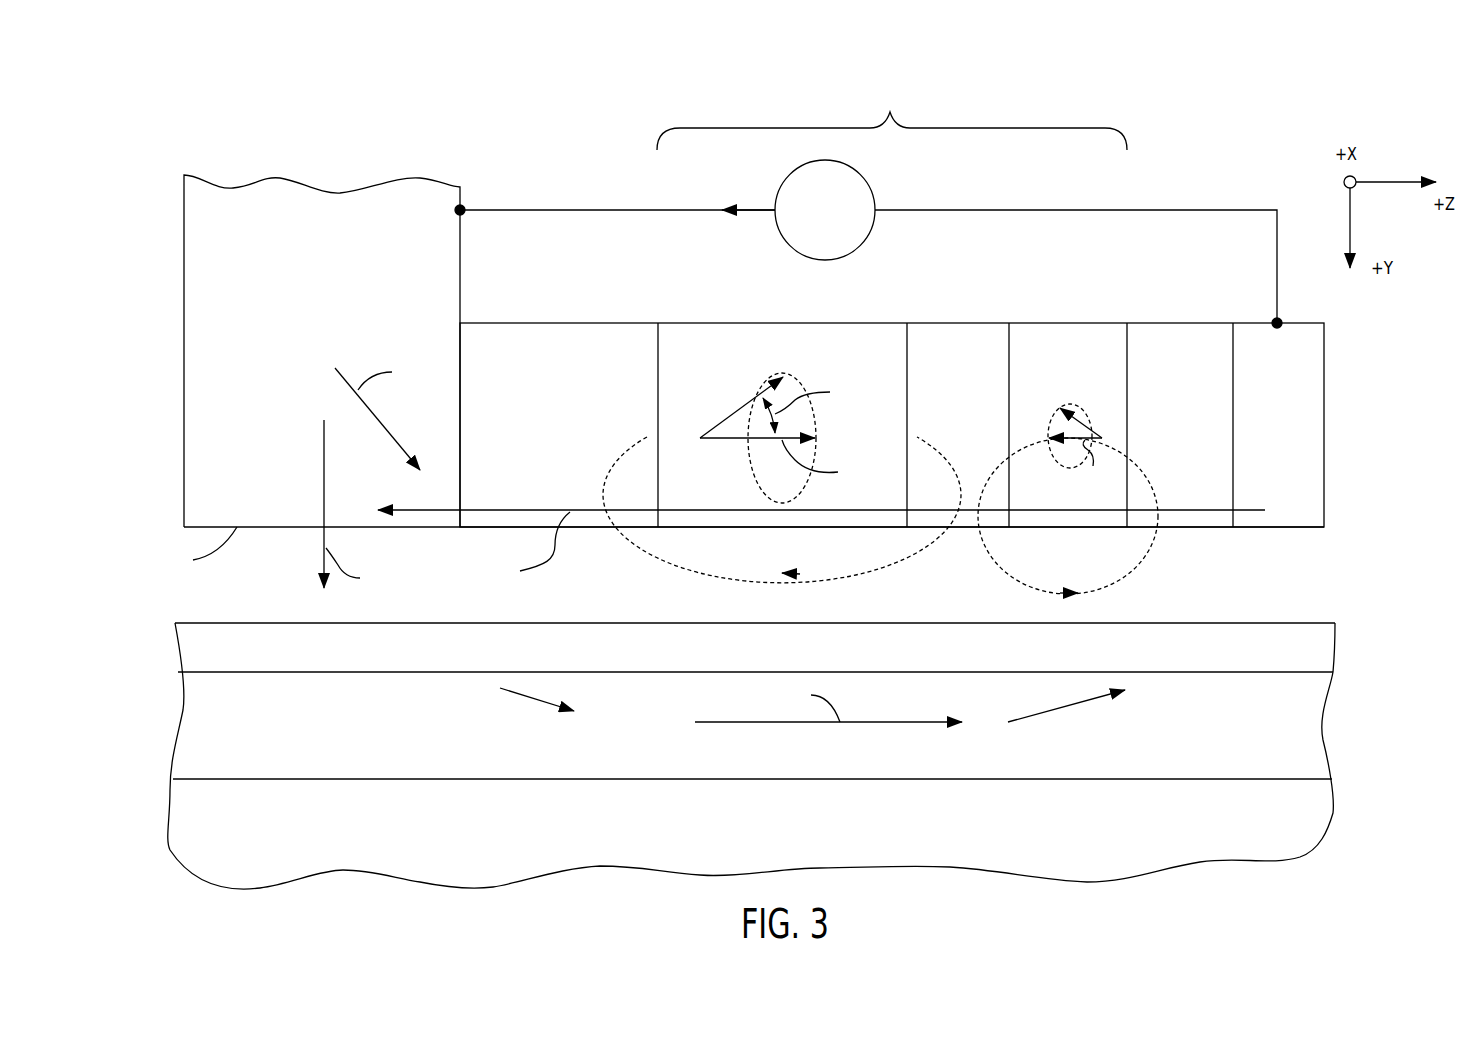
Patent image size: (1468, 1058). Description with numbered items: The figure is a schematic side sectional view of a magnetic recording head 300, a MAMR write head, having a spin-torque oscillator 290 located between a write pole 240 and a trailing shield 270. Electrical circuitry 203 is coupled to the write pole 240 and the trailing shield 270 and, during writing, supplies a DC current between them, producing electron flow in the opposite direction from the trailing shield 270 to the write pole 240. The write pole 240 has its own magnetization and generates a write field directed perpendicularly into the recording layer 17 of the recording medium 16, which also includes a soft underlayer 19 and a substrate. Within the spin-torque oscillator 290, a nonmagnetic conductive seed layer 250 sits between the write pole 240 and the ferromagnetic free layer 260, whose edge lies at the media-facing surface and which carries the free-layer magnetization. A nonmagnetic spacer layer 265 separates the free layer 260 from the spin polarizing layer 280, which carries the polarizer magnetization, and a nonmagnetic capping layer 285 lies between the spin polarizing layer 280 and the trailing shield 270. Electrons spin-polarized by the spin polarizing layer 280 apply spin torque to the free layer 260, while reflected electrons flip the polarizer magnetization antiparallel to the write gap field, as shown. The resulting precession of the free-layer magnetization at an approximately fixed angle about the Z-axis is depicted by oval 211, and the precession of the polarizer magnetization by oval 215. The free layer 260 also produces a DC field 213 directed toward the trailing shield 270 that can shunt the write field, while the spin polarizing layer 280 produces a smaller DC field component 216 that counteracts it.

The magnetic recording head 300 is at (184, 103).
The write pole 240 is at (210, 253).
The spin-torque oscillator 290 is at (892, 301).
The electrical circuitry 203 is at (872, 231).
The seed layer 250 is at (578, 323).
The free layer 260 is at (766, 323).
The nonmagnetic spacer layer 265 is at (961, 323).
The spin polarizing layer 280 is at (1068, 323).
The capping layer 285 is at (1165, 323).
The trailing shield 270 is at (1260, 323).
The oval 211 is at (750, 478).
The DC field 213 is at (715, 572).
The oval 215 is at (1058, 463).
The DC field component 216 is at (1132, 572).
The recording layer 17 is at (1300, 648).
The soft underlayer 19 is at (1305, 722).
The recording medium 16 is at (166, 892).